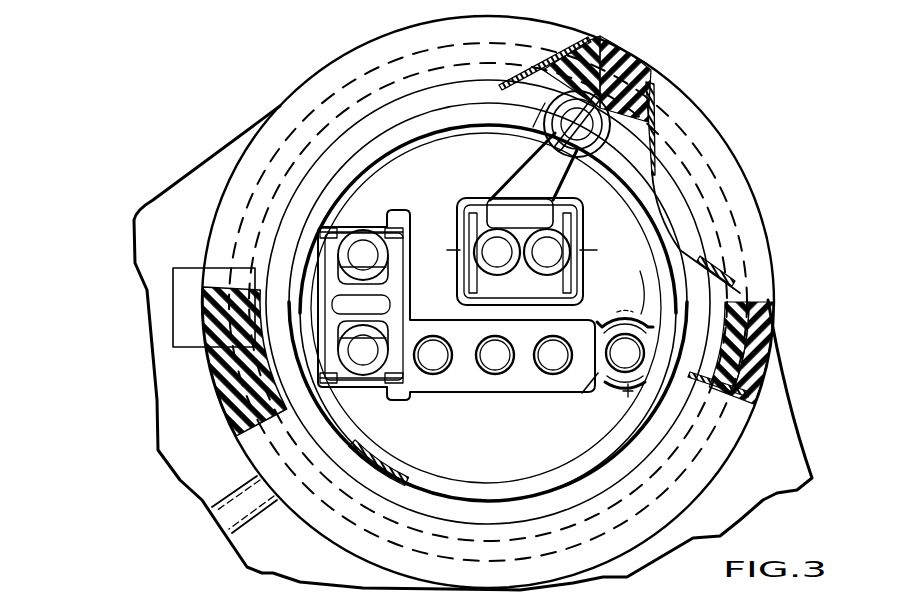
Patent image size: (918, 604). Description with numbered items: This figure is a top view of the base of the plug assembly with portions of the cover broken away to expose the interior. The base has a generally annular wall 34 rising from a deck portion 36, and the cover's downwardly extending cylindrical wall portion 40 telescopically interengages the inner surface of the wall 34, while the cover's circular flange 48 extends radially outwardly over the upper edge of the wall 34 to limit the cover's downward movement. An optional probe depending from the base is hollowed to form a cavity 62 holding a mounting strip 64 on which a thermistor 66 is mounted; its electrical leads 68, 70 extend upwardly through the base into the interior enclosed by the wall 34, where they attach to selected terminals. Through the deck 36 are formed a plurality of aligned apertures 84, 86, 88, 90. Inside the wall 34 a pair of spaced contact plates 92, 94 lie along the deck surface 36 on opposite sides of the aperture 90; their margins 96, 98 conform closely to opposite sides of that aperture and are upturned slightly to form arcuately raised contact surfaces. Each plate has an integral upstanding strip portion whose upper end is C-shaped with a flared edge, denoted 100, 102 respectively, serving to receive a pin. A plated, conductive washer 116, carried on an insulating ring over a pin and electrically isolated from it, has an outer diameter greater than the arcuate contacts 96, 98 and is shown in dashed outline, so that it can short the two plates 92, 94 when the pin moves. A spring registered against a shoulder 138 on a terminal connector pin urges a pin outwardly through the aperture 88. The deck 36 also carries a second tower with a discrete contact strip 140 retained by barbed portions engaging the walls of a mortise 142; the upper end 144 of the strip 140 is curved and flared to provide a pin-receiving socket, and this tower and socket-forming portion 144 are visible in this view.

The annular wall 34 is at (610, 52).
The deck portion 36 is at (178, 228).
The cylindrical wall portion 40 is at (645, 90).
The circular flange 48 is at (766, 200).
The cavity 62 is at (598, 122).
The mounting strip 64 is at (650, 96).
The thermistor 66 is at (558, 54).
The electrical lead 68 is at (540, 162).
The electrical lead 70 is at (575, 178).
The aperture 84 is at (430, 375).
The aperture 86 is at (490, 375).
The aperture 88 is at (548, 375).
The aperture 90 is at (608, 372).
The contact plate 92 is at (418, 176).
The contact plate 94 is at (487, 455).
The margin 96 is at (640, 281).
The margin 98 is at (628, 397).
The upstanding strip portion 100 is at (372, 192).
The upstanding strip portion 102 is at (345, 382).
The conductive washer 116 is at (598, 318).
The shoulder 138 is at (528, 187).
The contact strip 140 is at (578, 248).
The mortise 142 is at (553, 290).
The socket-forming end 144 is at (584, 216).